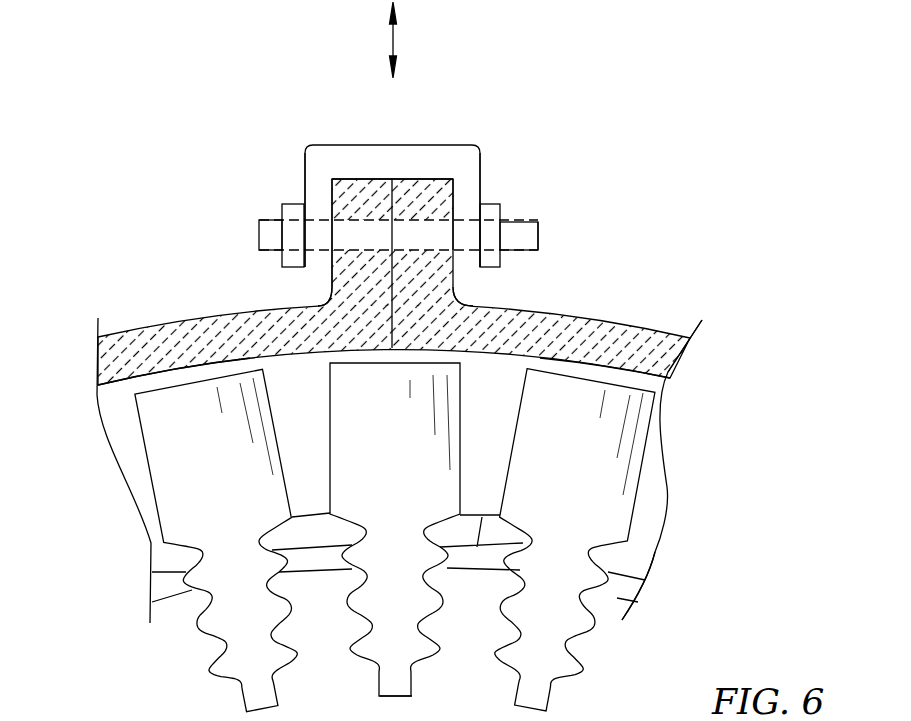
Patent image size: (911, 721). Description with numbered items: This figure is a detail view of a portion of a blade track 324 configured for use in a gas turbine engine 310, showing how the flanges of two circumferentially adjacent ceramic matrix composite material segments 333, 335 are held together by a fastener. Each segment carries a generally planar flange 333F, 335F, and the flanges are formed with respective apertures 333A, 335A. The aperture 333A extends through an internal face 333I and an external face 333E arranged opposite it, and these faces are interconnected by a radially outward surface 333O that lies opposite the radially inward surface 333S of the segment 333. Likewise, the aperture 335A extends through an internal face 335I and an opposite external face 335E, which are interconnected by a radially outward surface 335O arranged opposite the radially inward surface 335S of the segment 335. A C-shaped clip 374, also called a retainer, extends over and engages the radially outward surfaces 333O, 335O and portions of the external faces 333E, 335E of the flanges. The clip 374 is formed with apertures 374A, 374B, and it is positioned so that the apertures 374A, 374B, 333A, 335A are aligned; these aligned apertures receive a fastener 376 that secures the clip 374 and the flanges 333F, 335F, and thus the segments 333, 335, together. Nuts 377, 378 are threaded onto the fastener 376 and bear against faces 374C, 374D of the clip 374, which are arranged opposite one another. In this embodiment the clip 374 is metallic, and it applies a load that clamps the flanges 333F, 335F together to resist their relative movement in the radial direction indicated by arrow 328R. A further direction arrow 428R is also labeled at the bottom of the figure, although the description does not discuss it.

The gas turbine engine 310 is at (763, 32).
The blade track 324 is at (696, 94).
The radial direction arrow 328R is at (398, 42).
The ceramic matrix composite material segment 333 is at (677, 329).
The aperture 333A is at (473, 230).
The external face 333E is at (545, 236).
The flange 333F is at (482, 172).
The internal face 333I is at (392, 331).
The radially outward surface 333O is at (410, 180).
The radially inward surface 333S is at (553, 366).
The ceramic matrix composite material segment 335 is at (120, 353).
The aperture 335A is at (339, 224).
The external face 335E is at (330, 237).
The flange 335F is at (359, 192).
The internal face 335I is at (392, 315).
The radially outward surface 335O is at (341, 224).
The radially inward surface 335S is at (201, 364).
The C-shaped clip 374 is at (454, 153).
The aperture 374A is at (305, 231).
The aperture 374B is at (429, 229).
The face 374C is at (305, 178).
The face 374D is at (433, 190).
The fastener 376 is at (549, 247).
The nut 377 is at (265, 203).
The nut 378 is at (526, 240).
The radial direction 428R is at (412, 708).